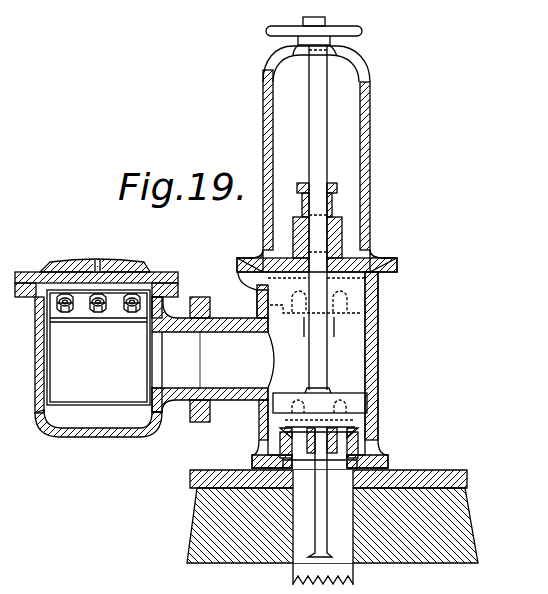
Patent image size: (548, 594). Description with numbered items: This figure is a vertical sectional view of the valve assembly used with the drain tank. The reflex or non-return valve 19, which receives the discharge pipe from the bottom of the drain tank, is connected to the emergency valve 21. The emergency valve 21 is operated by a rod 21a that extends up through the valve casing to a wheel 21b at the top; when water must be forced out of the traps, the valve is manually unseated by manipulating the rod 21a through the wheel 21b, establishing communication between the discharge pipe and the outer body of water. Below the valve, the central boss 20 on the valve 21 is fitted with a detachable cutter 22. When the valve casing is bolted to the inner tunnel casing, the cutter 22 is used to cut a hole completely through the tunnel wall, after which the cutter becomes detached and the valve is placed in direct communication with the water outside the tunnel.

The reflex or non-return valve 19 is at (100, 413).
The central boss 20 is at (338, 450).
The emergency valve 21 is at (342, 417).
The rod 21a is at (318, 140).
The wheel 21b is at (362, 31).
The detachable cutter 22 is at (320, 548).